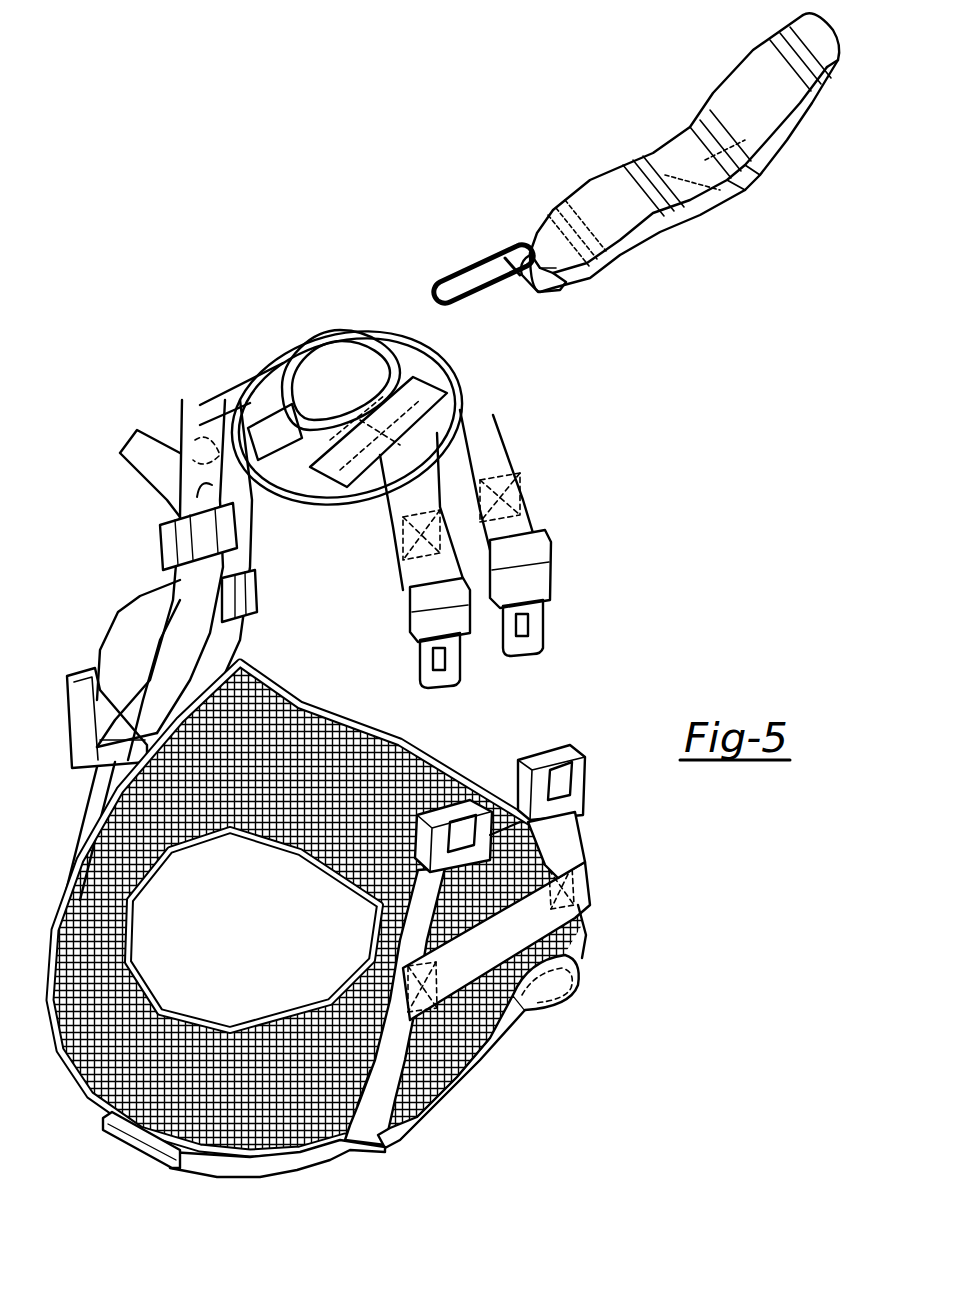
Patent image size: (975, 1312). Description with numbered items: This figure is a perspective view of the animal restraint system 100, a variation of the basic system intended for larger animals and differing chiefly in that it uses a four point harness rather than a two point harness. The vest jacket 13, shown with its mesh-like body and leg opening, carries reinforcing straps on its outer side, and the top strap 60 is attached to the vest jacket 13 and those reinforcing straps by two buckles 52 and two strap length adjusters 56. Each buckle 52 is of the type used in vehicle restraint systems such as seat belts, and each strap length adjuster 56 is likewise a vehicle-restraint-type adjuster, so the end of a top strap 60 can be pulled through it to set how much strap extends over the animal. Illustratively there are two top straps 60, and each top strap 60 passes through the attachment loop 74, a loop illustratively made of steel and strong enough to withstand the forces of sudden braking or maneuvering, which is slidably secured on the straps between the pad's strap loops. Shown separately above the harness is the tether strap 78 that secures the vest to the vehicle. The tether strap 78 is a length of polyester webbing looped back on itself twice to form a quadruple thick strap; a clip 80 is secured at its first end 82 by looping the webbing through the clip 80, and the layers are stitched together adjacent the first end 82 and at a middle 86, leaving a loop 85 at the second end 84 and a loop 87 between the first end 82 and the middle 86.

The vest jacket 13 is at (180, 1033).
The buckle 52 is at (526, 748).
The strap length adjuster 56 is at (163, 657).
The top strap 60 is at (520, 557).
The attachment loop 74 is at (300, 345).
The tether strap 78 is at (586, 172).
The clip 80 is at (465, 265).
The first end 82 is at (560, 292).
The second end 84 is at (840, 47).
The loop 85 is at (778, 135).
The middle 86 is at (712, 198).
The loop 87 is at (640, 242).
The animal restraint system 100 is at (616, 440).